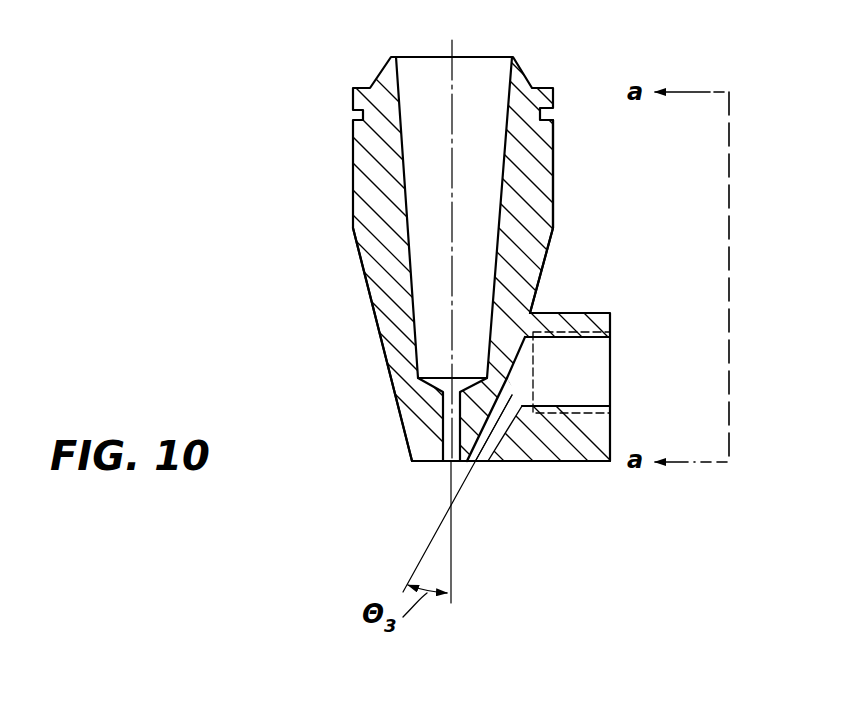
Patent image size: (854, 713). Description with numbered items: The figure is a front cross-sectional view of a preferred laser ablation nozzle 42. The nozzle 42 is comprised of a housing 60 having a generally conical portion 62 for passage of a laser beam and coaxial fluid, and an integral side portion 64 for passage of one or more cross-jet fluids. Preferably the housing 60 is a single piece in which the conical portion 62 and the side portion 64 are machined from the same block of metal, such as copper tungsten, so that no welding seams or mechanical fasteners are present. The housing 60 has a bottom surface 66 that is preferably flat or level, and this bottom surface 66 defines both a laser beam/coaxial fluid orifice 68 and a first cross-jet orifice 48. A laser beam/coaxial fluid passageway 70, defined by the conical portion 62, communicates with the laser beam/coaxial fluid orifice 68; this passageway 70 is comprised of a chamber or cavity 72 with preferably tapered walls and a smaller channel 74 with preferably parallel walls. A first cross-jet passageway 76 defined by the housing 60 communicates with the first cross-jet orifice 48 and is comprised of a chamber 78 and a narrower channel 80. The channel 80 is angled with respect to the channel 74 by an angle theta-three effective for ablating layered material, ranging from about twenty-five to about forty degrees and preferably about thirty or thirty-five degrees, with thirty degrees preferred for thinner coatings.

The laser ablation nozzle 42 is at (357, 45).
The chamber or cavity 72 is at (413, 97).
The laser beam/coaxial fluid passageway 70 is at (483, 78).
The housing 60 is at (555, 213).
The conical portion 62 is at (368, 290).
The first cross-jet passageway 76 is at (628, 360).
The chamber 78 is at (595, 357).
The channel 74 is at (440, 431).
The first cross-jet orifice 48 is at (482, 461).
The channel 80 is at (497, 435).
The bottom surface 66 is at (433, 461).
The laser beam/coaxial fluid orifice 68 is at (447, 461).
The side portion 64 is at (578, 463).